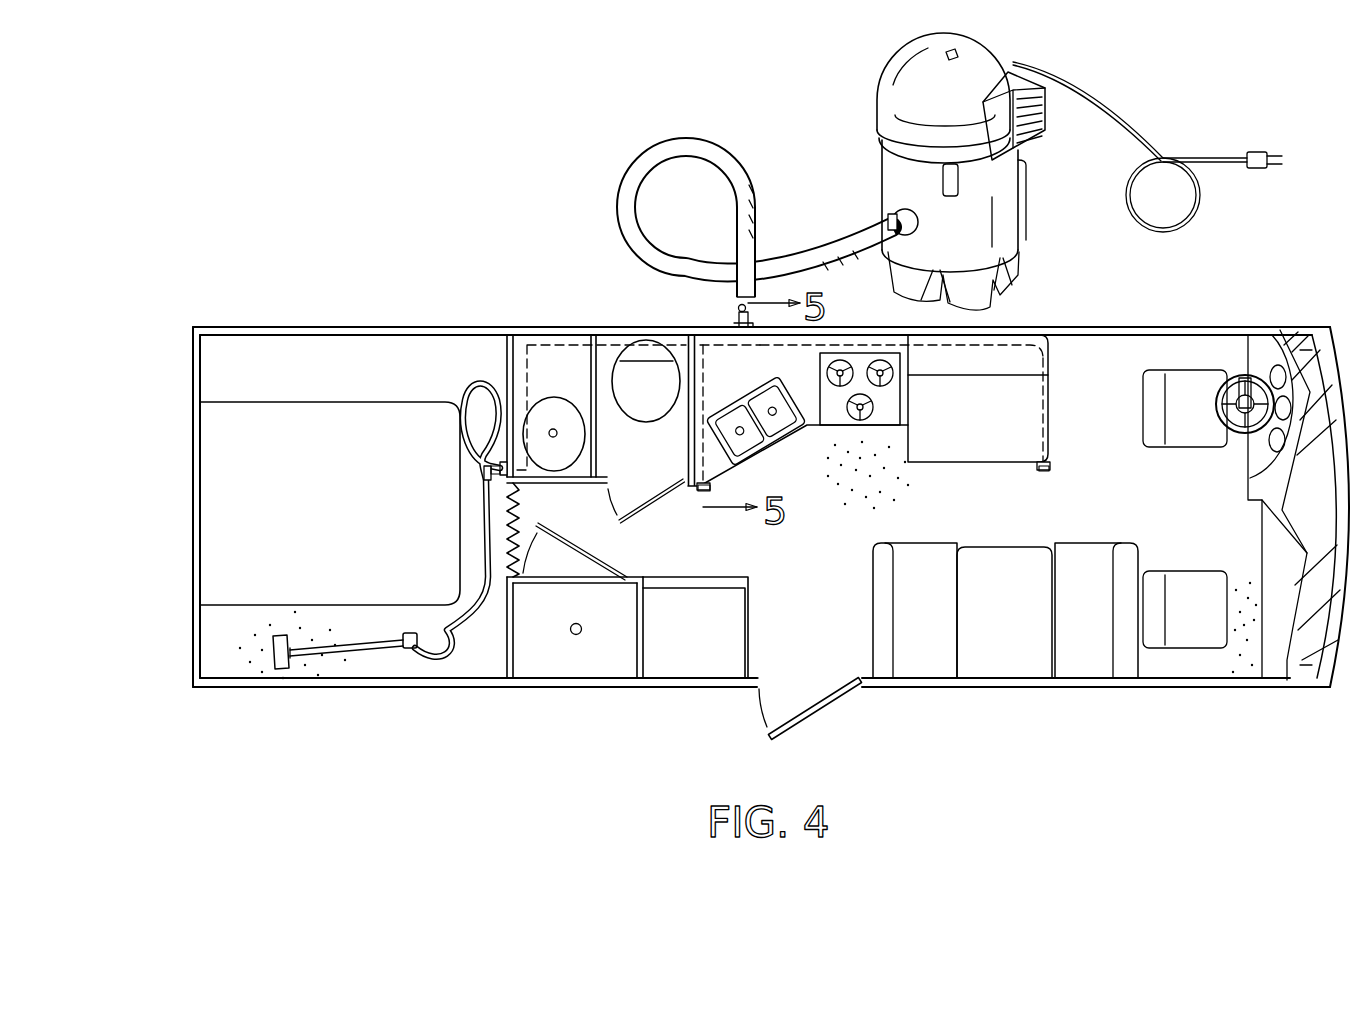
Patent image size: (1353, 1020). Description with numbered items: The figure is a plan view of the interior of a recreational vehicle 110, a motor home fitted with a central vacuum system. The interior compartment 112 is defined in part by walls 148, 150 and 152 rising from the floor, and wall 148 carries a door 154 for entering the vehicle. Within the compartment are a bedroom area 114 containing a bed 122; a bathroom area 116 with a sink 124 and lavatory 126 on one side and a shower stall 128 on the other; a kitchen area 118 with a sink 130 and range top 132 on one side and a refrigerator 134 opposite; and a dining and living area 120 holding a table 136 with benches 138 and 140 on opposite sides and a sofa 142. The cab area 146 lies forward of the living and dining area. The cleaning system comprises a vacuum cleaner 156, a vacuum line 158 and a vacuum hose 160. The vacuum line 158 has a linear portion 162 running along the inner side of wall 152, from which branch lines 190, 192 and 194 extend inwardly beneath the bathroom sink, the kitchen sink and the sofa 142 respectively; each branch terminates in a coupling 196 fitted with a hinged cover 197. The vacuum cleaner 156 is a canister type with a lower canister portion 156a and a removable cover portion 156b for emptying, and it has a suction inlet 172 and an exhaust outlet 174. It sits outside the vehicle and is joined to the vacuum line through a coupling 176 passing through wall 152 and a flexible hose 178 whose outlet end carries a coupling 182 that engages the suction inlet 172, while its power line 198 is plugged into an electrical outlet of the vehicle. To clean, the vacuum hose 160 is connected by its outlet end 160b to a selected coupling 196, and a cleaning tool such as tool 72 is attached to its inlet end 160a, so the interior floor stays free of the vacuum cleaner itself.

The tool 72 is at (348, 640).
The recreational vehicle 110 is at (455, 187).
The interior compartment 112 is at (857, 628).
The bedroom area 114 is at (342, 355).
The bathroom area 116 is at (603, 366).
The kitchen area 118 is at (806, 360).
The dining and living area 120 is at (1080, 405).
The bed 122 is at (293, 478).
The sink 124 is at (550, 415).
The lavatory 126 is at (644, 375).
The shower stall 128 is at (562, 660).
The sink 130 is at (745, 445).
The range top 132 is at (885, 417).
The refrigerator 134 is at (707, 665).
The table 136 is at (1008, 662).
The bench 138 is at (941, 613).
The bench 140 is at (1104, 613).
The sofa 142 is at (1001, 421).
The cab area 146 is at (1215, 355).
The wall 148 is at (1080, 688).
The wall 150 is at (192, 365).
The wall 152 is at (450, 325).
The door 154 is at (808, 717).
The vacuum cleaner 156 is at (950, 171).
The lower canister portion 156a is at (1020, 252).
The removable cover portion 156b is at (905, 100).
The vacuum line 158 is at (720, 340).
The vacuum hose 160 is at (483, 552).
The inlet end 160a is at (446, 642).
The outlet end 160b is at (487, 473).
The linear portion 162 is at (985, 330).
The suction inlet 172 is at (993, 212).
The exhaust outlet 174 is at (1030, 120).
The coupling 176 is at (752, 320).
The flexible hose 178 is at (690, 132).
The coupling 182 is at (895, 226).
The branch line 190 is at (525, 385).
The branch line 192 is at (703, 446).
The branch line 194 is at (1048, 435).
The coupling 196 is at (499, 467).
The hinged cover 197 is at (488, 478).
The power line 198 is at (1218, 158).